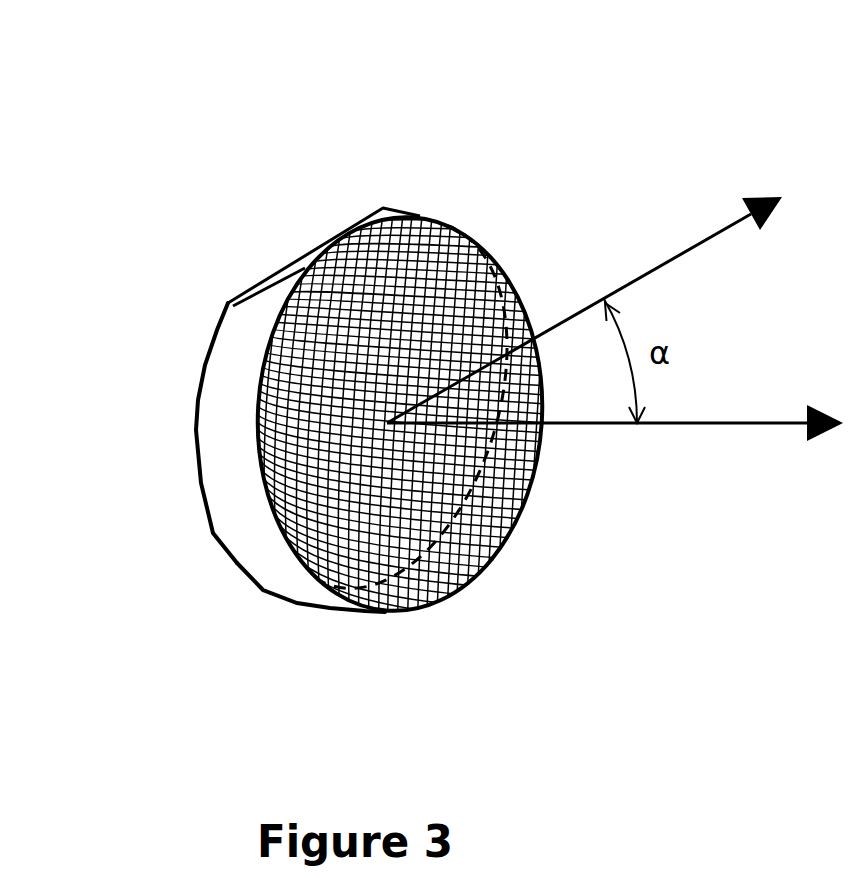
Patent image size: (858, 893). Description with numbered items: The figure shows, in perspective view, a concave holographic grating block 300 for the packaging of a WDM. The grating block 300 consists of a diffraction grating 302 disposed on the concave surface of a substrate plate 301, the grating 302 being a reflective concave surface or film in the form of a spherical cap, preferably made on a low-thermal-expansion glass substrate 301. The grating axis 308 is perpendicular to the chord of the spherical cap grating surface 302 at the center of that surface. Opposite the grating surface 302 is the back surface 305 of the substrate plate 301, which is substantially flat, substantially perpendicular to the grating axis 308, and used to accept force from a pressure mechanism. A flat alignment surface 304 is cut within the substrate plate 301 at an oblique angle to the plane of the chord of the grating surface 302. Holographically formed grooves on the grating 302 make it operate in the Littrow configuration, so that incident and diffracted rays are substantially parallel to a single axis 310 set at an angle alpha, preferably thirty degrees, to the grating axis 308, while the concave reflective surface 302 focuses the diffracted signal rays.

The grating block 300 is at (213, 88).
The substrate plate 301 is at (248, 522).
The diffraction grating 302 is at (427, 610).
The flat alignment surface 304 is at (282, 273).
The back surface 305 is at (203, 483).
The grating axis 308 is at (777, 423).
The single axis 310 is at (720, 228).